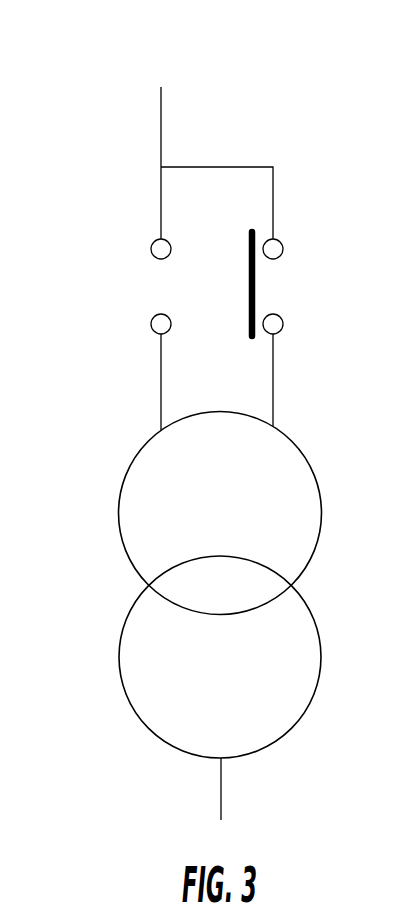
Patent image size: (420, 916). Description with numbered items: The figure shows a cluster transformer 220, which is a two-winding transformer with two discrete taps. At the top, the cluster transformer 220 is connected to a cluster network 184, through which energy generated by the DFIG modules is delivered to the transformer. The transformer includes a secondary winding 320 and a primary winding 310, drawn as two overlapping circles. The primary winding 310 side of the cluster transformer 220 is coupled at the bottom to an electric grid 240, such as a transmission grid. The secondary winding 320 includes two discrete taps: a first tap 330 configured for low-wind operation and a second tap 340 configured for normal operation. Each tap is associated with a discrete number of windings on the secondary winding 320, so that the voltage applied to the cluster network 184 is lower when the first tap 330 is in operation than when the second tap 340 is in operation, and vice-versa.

The cluster transformer 220 is at (81, 140).
The cluster network 184 is at (141, 120).
The first tap 330 is at (146, 285).
The second tap 340 is at (304, 291).
The secondary winding 320 is at (108, 524).
The primary winding 310 is at (100, 679).
The electric grid 240 is at (201, 794).